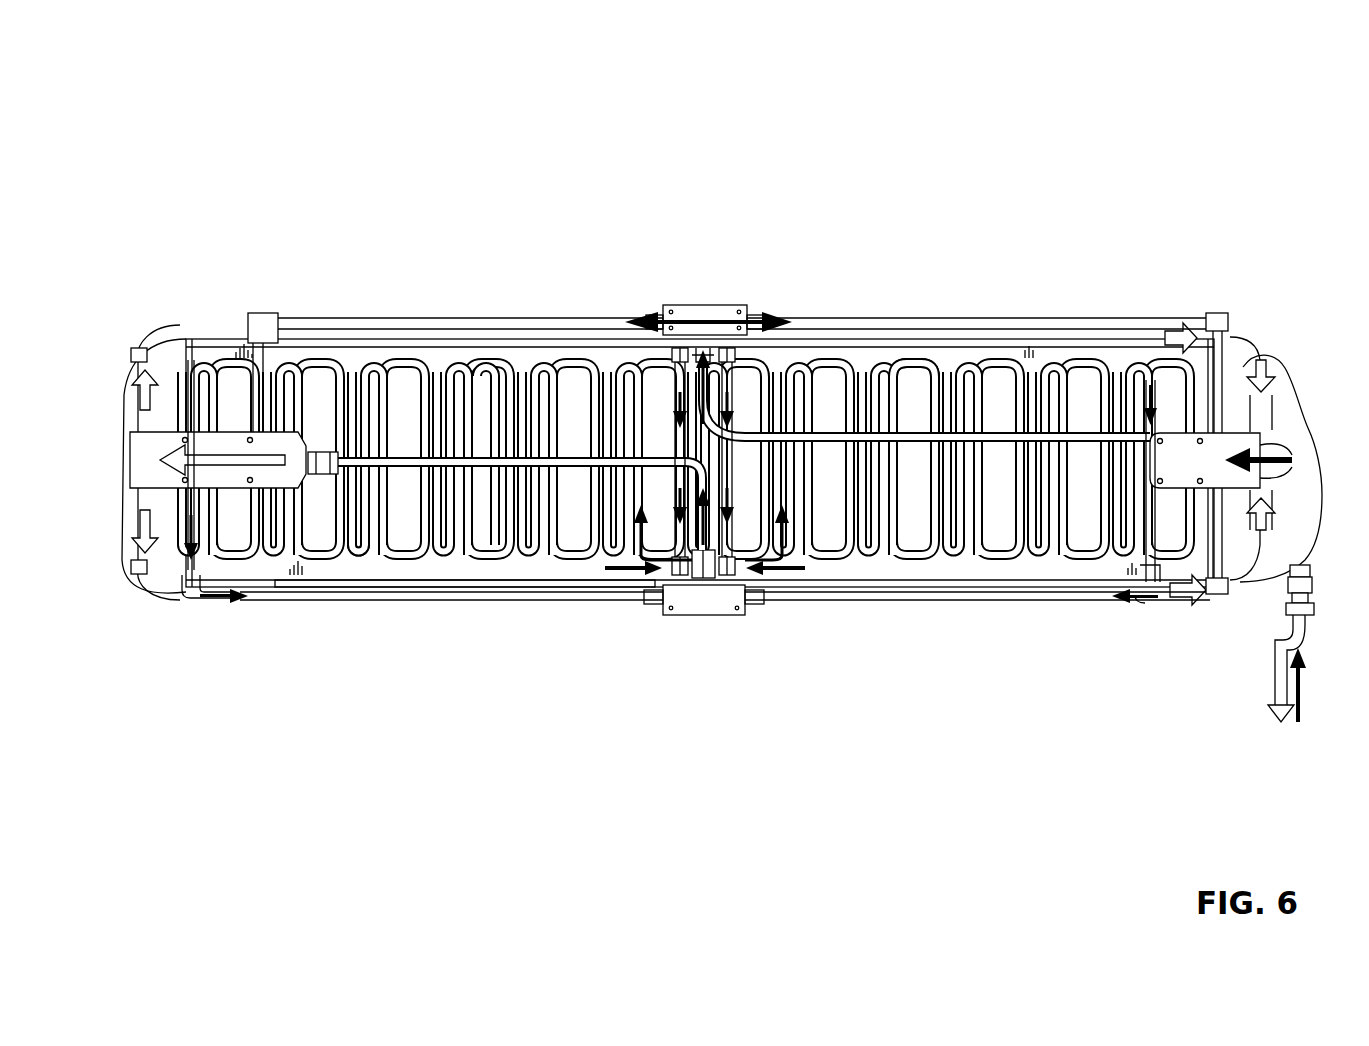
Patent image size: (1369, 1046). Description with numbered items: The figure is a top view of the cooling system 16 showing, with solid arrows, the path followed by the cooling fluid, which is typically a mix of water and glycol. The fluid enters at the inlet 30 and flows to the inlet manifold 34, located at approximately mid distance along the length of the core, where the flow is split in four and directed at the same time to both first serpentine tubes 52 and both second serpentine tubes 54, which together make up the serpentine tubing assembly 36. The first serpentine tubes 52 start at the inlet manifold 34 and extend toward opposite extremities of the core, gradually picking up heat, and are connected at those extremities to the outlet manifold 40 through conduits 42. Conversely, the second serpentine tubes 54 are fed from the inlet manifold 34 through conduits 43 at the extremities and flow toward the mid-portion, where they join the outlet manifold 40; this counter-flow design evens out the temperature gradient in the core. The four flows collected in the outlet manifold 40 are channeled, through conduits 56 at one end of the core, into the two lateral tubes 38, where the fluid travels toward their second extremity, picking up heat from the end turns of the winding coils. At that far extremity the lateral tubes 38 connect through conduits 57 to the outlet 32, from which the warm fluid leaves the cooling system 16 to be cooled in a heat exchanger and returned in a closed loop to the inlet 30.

The cooling system 16 is at (730, 146).
The inlet 30 is at (1290, 620).
The outlet 32 is at (1288, 609).
The inlet manifold 34 is at (678, 312).
The serpentine tubing assembly 36 is at (488, 362).
The lateral tubes 38 is at (1163, 345).
The outlet manifold 40 is at (704, 600).
The conduits 42 is at (575, 600).
The conduits 43 is at (534, 320).
The first serpentine tubes 52 is at (378, 362).
The second serpentine tubes 54 is at (905, 360).
The conduits 56 is at (362, 462).
The conduits 57 is at (1296, 462).